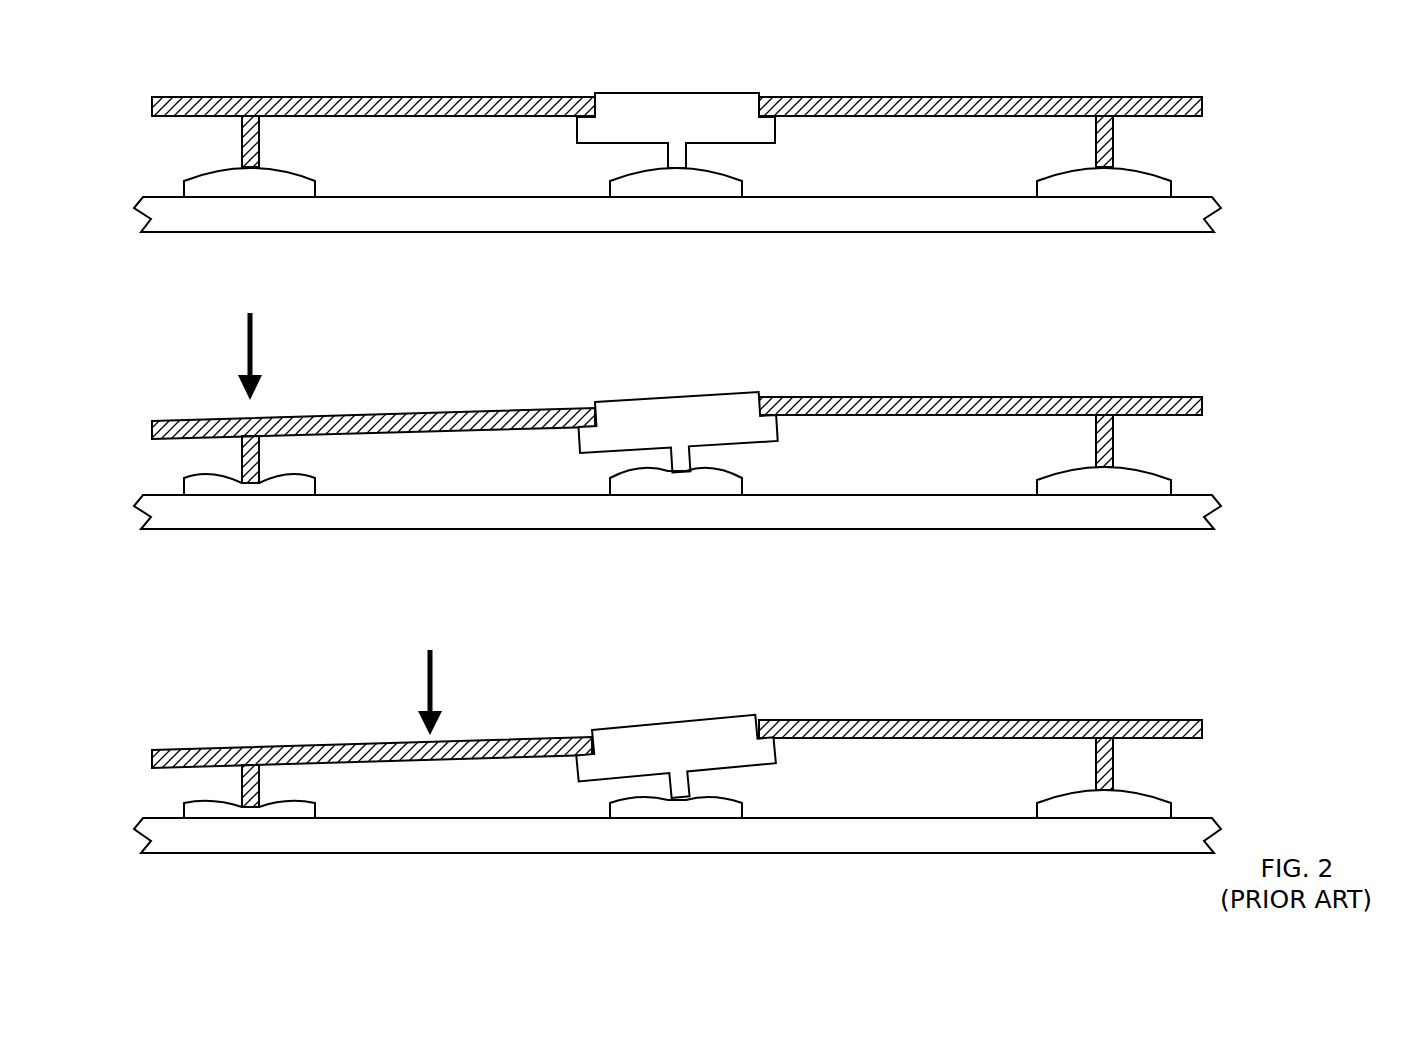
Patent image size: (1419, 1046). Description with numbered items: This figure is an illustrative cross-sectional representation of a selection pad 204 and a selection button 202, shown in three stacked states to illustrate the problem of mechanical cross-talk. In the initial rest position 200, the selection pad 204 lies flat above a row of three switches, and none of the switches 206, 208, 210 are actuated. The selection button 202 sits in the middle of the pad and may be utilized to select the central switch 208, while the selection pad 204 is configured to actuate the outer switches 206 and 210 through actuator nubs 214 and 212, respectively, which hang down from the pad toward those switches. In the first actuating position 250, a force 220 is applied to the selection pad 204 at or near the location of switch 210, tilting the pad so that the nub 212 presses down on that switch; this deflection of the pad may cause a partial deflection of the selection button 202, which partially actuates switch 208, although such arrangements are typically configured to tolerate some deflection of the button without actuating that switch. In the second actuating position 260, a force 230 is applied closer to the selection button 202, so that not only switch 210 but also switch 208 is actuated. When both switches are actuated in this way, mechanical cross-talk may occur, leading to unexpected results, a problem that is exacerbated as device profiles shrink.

The initial rest position 200 is at (1226, 71).
The selection button 202 is at (700, 93).
The selection pad 204 is at (865, 97).
The switch 206 is at (1153, 192).
The switch 208 is at (725, 192).
The switch 210 is at (297, 192).
The actuator nub 212 is at (242, 149).
The actuator nub 214 is at (1113, 143).
The force 220 is at (249, 344).
The force 230 is at (429, 680).
The first actuating position 250 is at (1226, 378).
The second actuating position 260 is at (1226, 701).